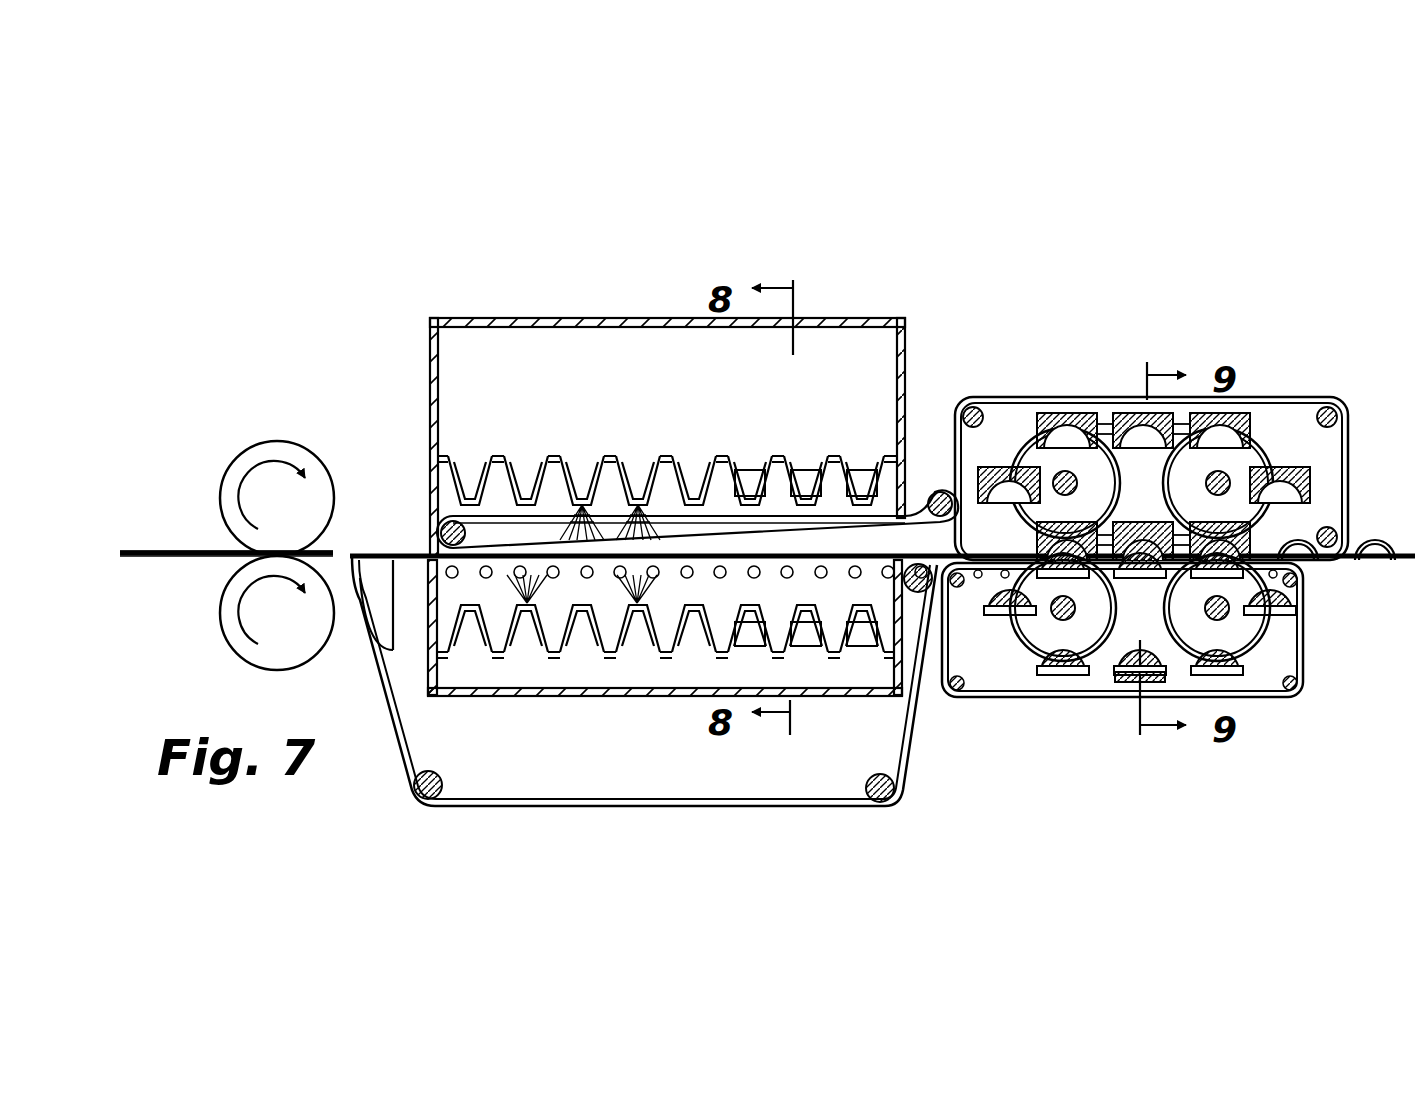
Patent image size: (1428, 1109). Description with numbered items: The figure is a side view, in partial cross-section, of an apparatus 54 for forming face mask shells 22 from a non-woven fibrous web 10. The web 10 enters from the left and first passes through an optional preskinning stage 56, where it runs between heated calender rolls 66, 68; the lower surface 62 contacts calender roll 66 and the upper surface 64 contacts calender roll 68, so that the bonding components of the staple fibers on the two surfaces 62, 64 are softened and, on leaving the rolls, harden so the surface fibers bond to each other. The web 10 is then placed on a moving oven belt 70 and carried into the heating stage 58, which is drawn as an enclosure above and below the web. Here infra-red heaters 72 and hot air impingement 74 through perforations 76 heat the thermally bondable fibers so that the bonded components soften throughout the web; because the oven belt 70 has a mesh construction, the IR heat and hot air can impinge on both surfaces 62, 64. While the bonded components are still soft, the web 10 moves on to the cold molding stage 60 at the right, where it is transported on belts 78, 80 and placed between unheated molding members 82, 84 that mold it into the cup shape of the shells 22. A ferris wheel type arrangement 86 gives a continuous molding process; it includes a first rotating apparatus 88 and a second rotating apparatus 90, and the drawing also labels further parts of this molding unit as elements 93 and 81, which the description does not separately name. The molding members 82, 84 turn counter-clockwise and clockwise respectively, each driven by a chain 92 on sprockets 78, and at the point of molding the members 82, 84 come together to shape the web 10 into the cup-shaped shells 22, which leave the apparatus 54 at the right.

The non-woven fibrous web 10 is at (131, 551).
The upper surface 64 is at (186, 551).
The lower surface 62 is at (186, 560).
The preskinning stage 56 is at (294, 527).
The heated calender roll 68 is at (298, 514).
The heated calender roll 66 is at (293, 627).
The heating stage 58 is at (522, 307).
The hot air impingement 74 is at (585, 500).
The perforations 76 is at (590, 530).
The infra-red heaters 72 is at (776, 460).
The second rotating apparatus 90 is at (920, 518).
The oven belt 70 is at (404, 775).
The apparatus 54 is at (990, 272).
The cold molding stage 60 is at (1045, 365).
The belt 80 is at (1185, 526).
The molding member 82 is at (1003, 467).
The ferris wheel type arrangement 86 is at (1265, 415).
The right side pad 93 is at (1272, 450).
The chain 92 is at (1345, 432).
The face mask shell 22 is at (1362, 548).
The belt 78 is at (1160, 658).
The lower rollers 81 is at (1305, 614).
The molding member 84 is at (1045, 672).
The first rotating apparatus 88 is at (1120, 692).